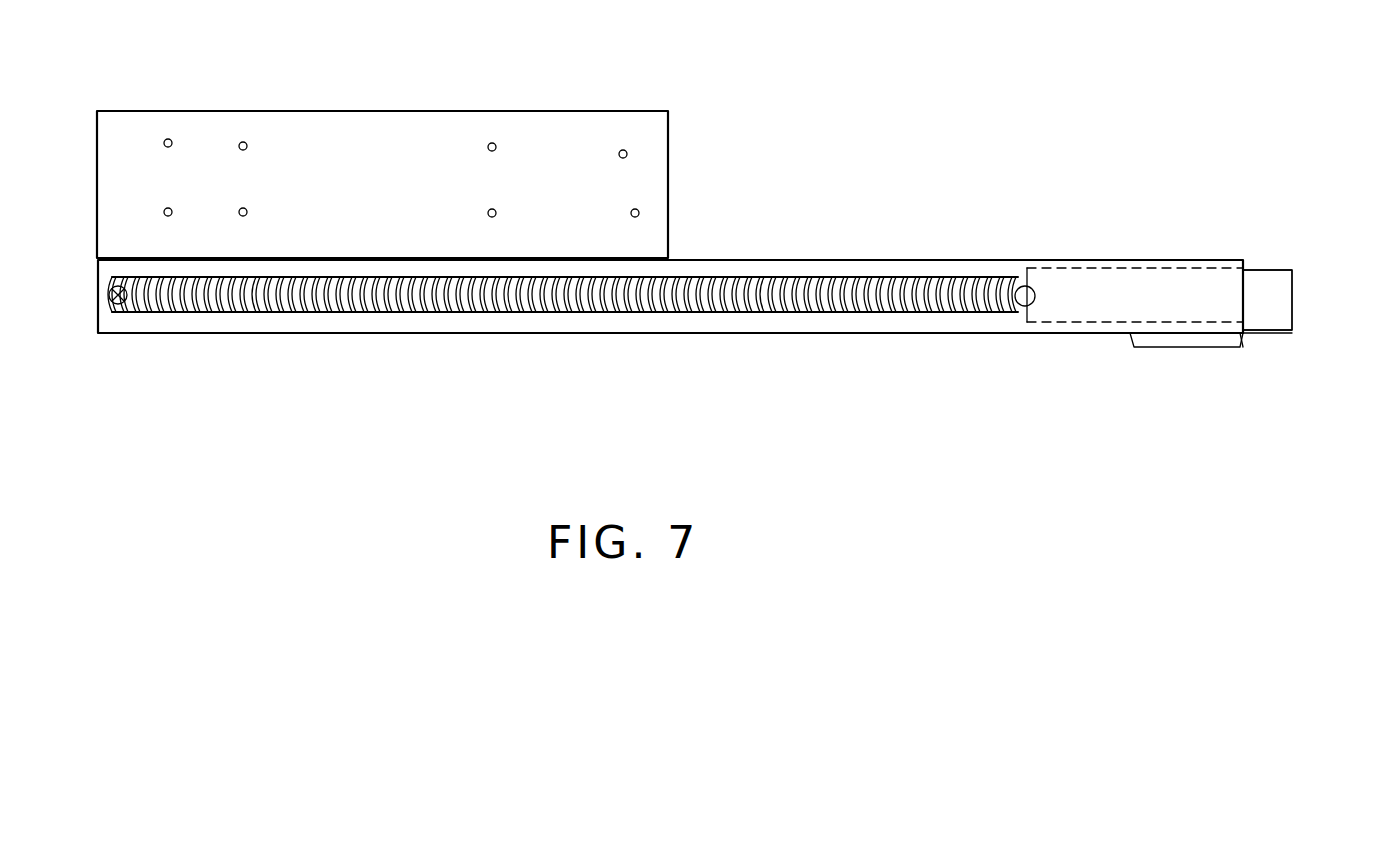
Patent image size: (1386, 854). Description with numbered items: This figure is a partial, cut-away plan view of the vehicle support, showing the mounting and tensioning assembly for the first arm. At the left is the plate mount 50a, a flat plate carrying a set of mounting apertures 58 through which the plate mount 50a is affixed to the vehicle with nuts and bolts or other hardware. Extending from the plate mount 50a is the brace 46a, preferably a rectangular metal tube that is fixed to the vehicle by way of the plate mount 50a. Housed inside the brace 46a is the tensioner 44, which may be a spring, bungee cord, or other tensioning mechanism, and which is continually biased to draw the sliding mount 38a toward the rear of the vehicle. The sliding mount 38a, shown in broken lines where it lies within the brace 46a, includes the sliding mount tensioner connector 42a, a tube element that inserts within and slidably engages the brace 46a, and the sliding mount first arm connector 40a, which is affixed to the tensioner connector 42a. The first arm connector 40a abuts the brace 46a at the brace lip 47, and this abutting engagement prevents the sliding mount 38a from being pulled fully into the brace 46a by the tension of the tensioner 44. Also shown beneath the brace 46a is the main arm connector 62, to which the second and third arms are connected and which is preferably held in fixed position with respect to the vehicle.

The plate mount 50a is at (598, 112).
The mounting apertures 58 is at (245, 138).
The brace 46a is at (540, 334).
The tensioner 44 is at (808, 280).
The sliding mount 38a is at (1202, 288).
The sliding mount tensioner connector 42a is at (1280, 297).
The sliding mount first arm connector 40a is at (1277, 334).
The main arm connector 62 is at (1177, 346).
The brace lip 47 is at (1253, 328).